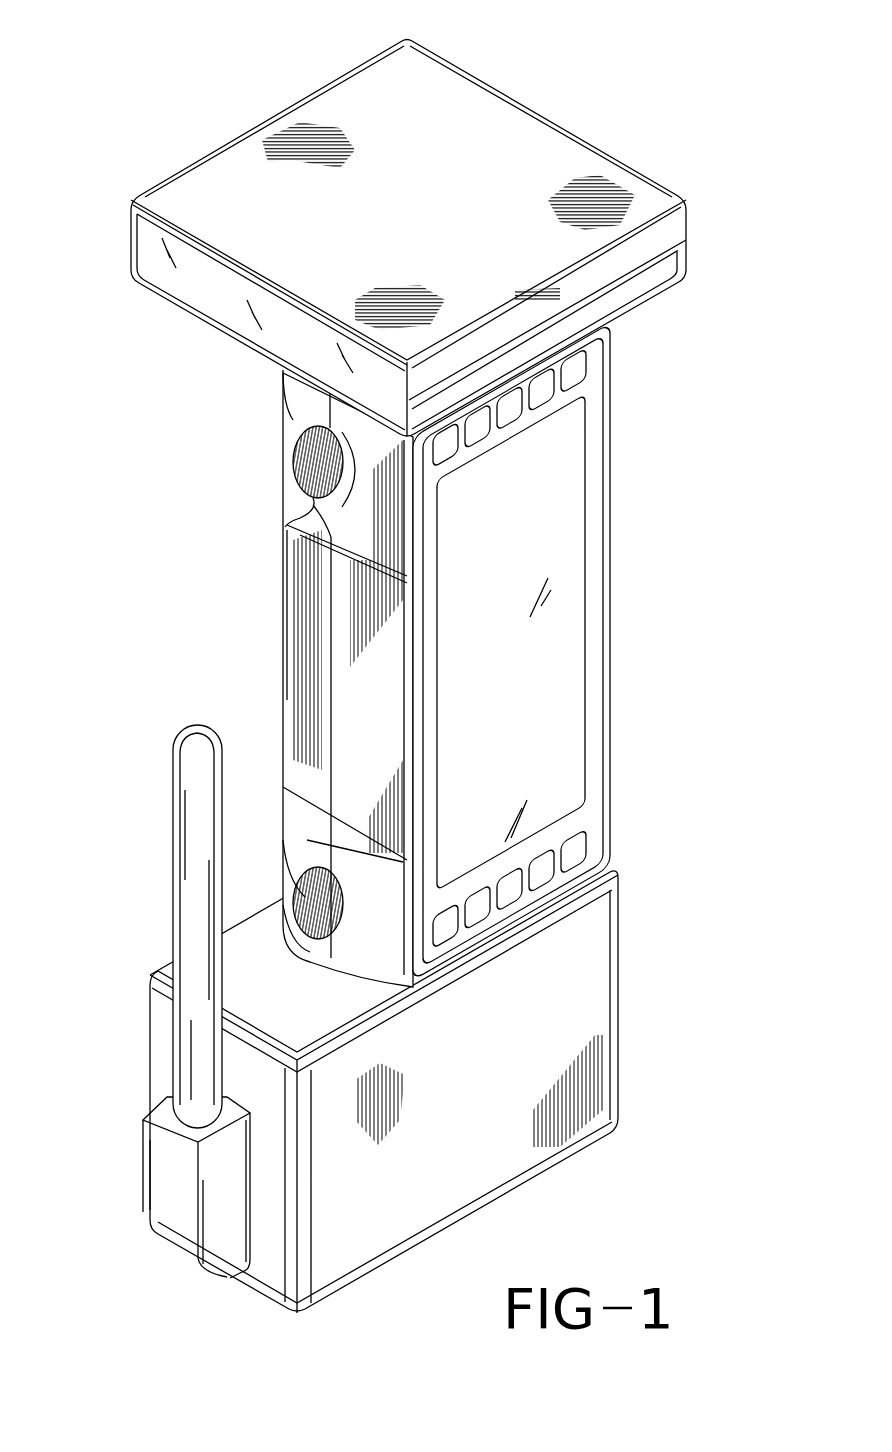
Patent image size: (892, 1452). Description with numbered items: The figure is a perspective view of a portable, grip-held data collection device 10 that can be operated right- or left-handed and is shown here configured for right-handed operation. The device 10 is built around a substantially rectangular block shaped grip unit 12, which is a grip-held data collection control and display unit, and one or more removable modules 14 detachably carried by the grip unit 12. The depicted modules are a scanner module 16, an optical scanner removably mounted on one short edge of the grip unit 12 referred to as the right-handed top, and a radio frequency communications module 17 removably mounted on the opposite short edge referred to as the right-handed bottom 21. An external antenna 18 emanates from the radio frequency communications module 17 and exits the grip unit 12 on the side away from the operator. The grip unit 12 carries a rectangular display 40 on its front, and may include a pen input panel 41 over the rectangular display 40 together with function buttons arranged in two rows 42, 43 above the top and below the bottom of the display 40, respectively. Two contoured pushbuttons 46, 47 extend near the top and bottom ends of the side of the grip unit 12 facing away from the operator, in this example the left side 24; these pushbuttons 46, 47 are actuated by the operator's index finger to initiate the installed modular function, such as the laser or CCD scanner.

The grip-held device 10 is at (630, 76).
The grip unit 12 is at (559, 651).
The removable modules 14 is at (458, 556).
The scanner module 16 is at (670, 270).
The radio frequency communications module 17 is at (580, 955).
The external antenna 18 is at (192, 800).
The bottom 21 is at (607, 422).
The left side 24 is at (308, 678).
The rectangular display 40 is at (559, 642).
The pen input panel 41 is at (565, 745).
The row of function buttons 42 is at (590, 362).
The row of function buttons 43 is at (583, 855).
The contoured pushbutton 46 is at (320, 463).
The contoured pushbutton 47 is at (308, 900).